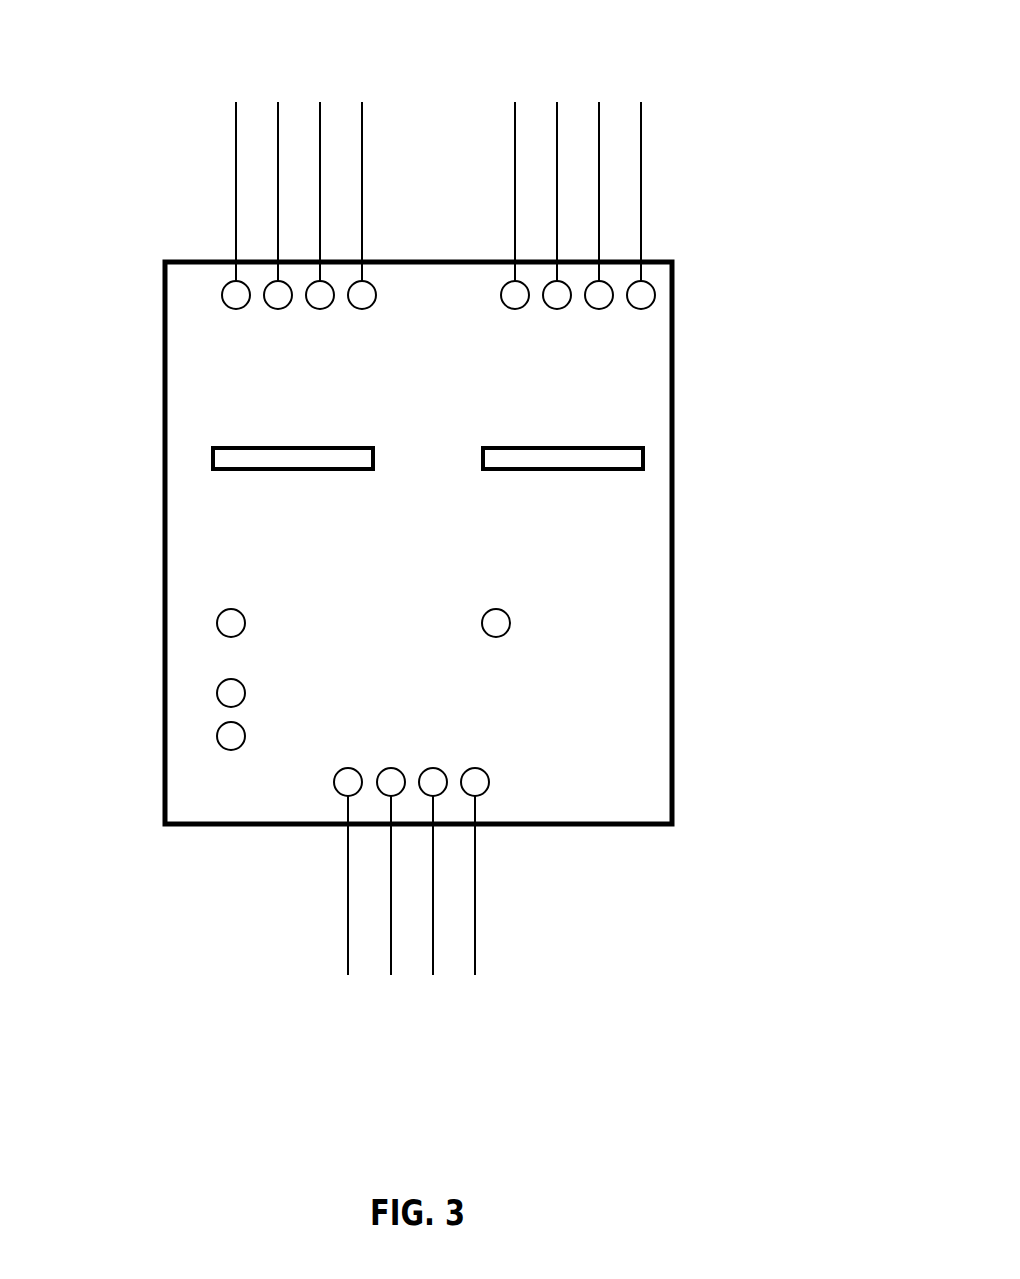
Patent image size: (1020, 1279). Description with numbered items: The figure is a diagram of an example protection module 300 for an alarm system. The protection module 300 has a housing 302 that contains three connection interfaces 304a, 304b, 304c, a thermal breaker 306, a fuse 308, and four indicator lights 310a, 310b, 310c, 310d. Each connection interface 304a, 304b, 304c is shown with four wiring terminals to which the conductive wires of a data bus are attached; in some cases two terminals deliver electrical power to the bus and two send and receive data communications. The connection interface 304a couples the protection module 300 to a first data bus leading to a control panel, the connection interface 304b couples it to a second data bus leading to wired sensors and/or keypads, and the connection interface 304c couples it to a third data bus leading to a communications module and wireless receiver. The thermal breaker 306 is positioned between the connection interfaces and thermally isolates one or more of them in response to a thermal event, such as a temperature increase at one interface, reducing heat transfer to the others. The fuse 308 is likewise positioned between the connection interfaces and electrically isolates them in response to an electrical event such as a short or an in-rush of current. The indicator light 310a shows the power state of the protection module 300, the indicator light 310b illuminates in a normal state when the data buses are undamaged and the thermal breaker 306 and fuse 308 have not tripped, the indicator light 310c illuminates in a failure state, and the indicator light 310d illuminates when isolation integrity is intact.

The protection module 300 is at (772, 127).
The housing 302 is at (653, 380).
The connection interface 304a is at (198, 249).
The connection interface 304b is at (670, 246).
The connection interface 304c is at (512, 759).
The thermal breaker 306 is at (277, 457).
The fuse 308 is at (552, 457).
The indicator light 310a is at (228, 626).
The indicator light 310b is at (228, 696).
The indicator light 310c is at (228, 738).
The indicator light 310d is at (493, 617).